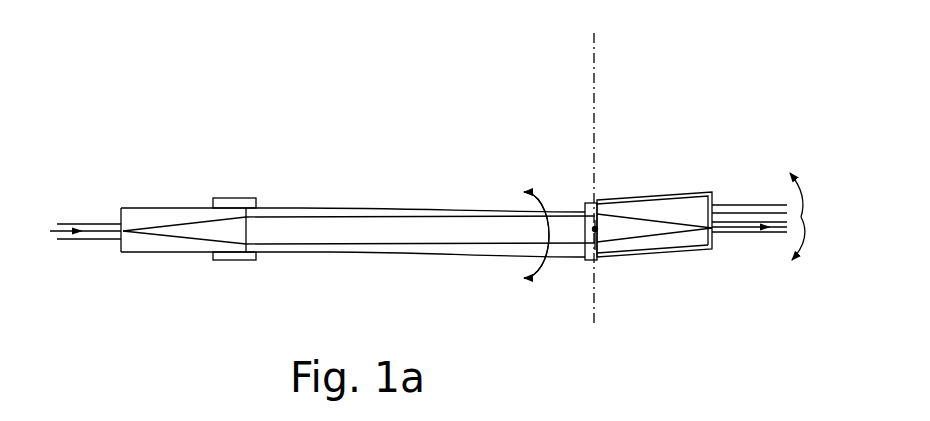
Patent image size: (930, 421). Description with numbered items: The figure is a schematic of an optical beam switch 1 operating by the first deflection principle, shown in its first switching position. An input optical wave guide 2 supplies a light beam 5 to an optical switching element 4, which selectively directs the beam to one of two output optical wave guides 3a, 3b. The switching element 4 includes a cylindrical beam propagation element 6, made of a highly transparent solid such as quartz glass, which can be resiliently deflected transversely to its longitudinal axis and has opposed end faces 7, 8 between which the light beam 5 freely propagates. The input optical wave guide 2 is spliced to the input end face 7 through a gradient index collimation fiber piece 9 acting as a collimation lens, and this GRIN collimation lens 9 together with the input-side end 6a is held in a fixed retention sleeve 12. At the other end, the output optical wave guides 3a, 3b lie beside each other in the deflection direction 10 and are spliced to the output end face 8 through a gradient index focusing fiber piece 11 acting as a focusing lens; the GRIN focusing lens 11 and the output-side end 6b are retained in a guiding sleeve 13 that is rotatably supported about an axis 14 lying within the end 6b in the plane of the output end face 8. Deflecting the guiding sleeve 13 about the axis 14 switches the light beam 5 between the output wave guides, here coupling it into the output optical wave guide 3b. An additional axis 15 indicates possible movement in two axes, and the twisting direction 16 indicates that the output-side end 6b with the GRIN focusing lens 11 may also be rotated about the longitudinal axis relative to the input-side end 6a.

The optical beam switch 1 is at (436, 167).
The input optical wave guide 2 is at (83, 223).
The output optical wave guide 3a is at (732, 205).
The output optical wave guide 3b is at (741, 233).
The optical switching element 4 is at (415, 128).
The light beam 5 is at (108, 240).
The beam propagation element 6 is at (443, 251).
The input-side end of beam propagation element 6a is at (252, 231).
The output-side end of beam propagation element 6b is at (593, 226).
The input end face 7 is at (244, 233).
The output end face 8 is at (598, 232).
The gradient index collimation fiber piece 9 is at (168, 246).
The deflection direction 10 is at (800, 170).
The gradient index focusing fiber piece 11 is at (668, 215).
The retention sleeve 12 is at (222, 198).
The guiding sleeve 13 is at (660, 254).
The axis 14 is at (593, 232).
The additional axis 15 is at (593, 70).
The twisting direction 16 is at (540, 187).